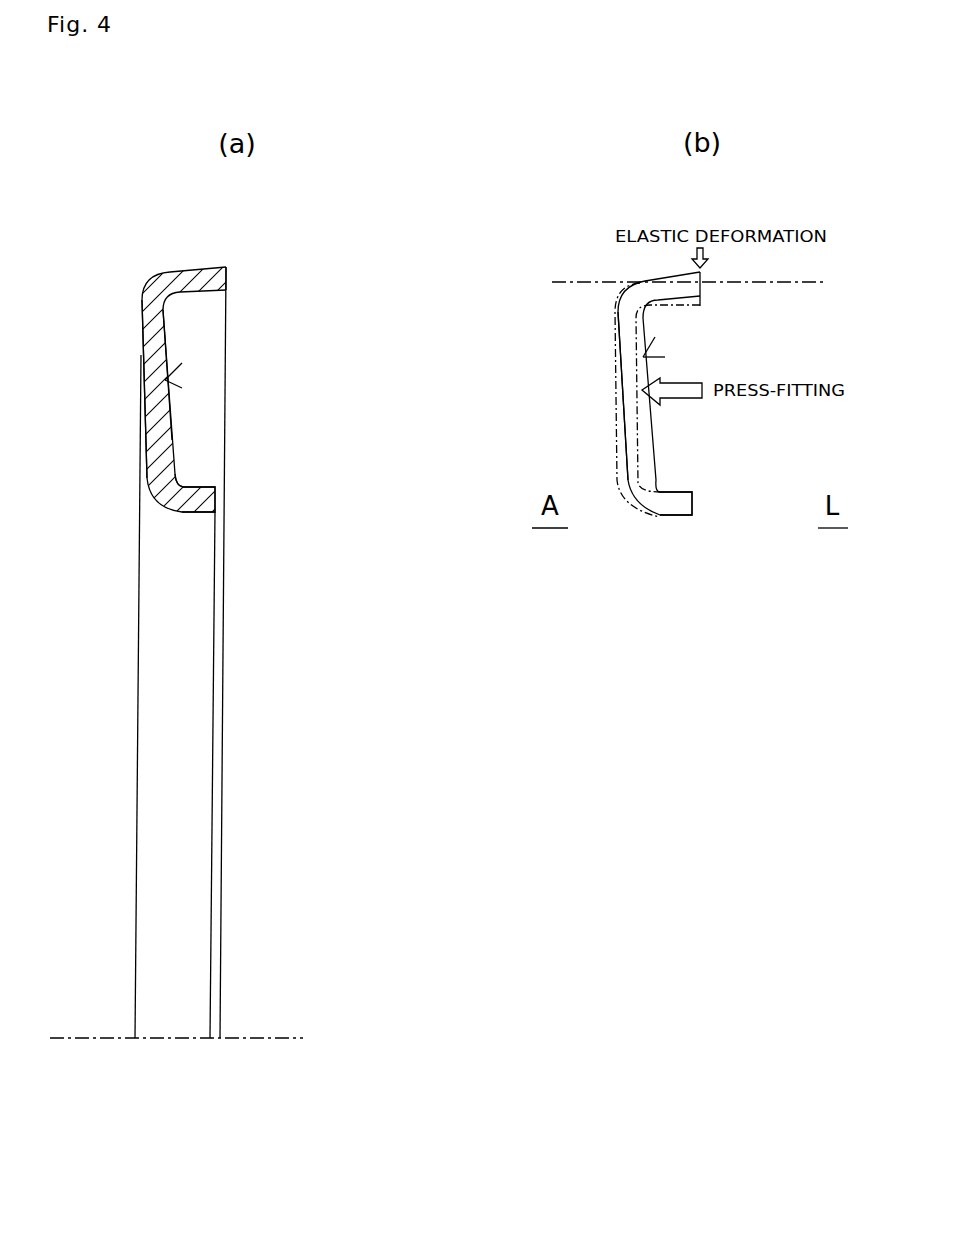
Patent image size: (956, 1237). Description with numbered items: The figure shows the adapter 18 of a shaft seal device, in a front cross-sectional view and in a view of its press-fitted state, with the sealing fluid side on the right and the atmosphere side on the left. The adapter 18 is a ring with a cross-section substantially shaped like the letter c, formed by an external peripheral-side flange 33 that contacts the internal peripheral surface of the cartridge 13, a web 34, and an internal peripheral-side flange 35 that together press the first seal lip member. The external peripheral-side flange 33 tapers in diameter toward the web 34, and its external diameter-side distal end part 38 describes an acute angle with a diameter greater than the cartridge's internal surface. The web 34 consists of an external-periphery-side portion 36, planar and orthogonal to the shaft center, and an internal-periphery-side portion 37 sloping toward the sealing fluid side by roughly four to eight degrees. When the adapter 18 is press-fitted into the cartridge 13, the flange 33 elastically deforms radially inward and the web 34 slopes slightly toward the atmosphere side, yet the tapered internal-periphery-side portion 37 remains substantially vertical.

The cartridge 13 is at (802, 280).
The adapter 18 is at (165, 380).
The external peripheral-side flange 33 is at (177, 272).
The web 34 is at (142, 367).
The internal peripheral-side flange 35 is at (202, 502).
The external-periphery-side portion 36 is at (163, 333).
The internal-periphery-side portion 37 is at (163, 452).
The external diameter-side distal end part 38 is at (226, 267).